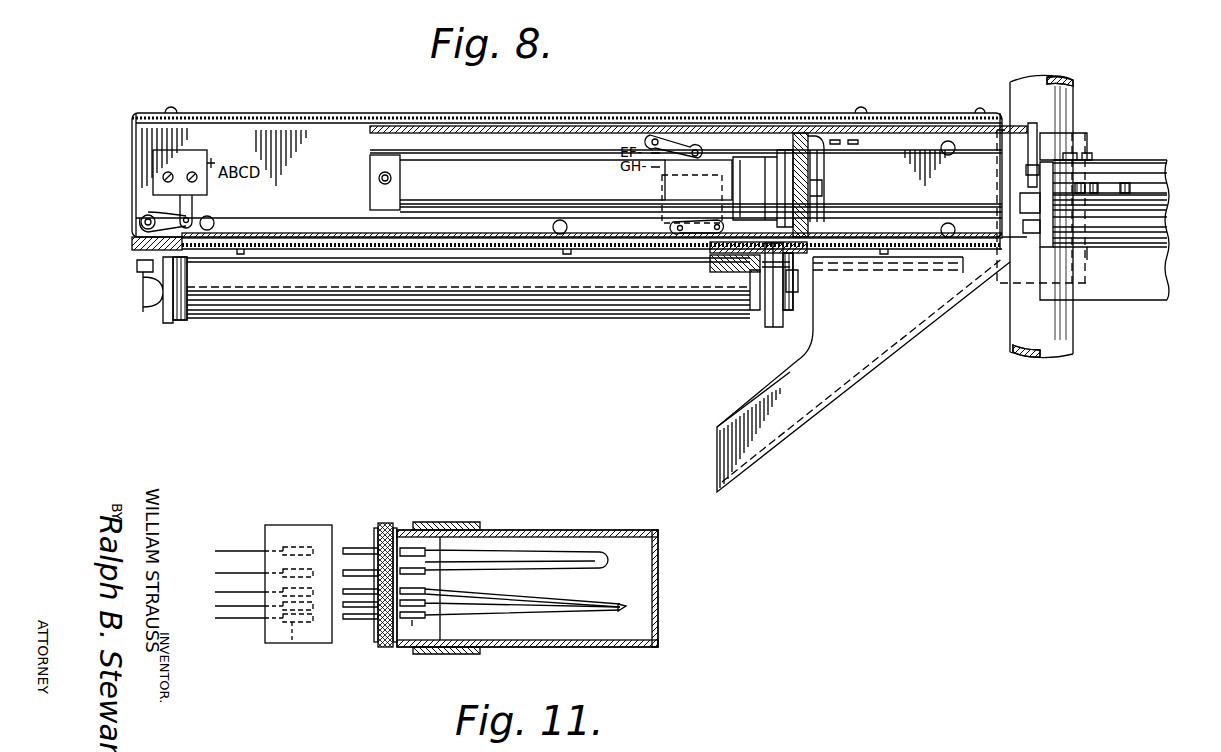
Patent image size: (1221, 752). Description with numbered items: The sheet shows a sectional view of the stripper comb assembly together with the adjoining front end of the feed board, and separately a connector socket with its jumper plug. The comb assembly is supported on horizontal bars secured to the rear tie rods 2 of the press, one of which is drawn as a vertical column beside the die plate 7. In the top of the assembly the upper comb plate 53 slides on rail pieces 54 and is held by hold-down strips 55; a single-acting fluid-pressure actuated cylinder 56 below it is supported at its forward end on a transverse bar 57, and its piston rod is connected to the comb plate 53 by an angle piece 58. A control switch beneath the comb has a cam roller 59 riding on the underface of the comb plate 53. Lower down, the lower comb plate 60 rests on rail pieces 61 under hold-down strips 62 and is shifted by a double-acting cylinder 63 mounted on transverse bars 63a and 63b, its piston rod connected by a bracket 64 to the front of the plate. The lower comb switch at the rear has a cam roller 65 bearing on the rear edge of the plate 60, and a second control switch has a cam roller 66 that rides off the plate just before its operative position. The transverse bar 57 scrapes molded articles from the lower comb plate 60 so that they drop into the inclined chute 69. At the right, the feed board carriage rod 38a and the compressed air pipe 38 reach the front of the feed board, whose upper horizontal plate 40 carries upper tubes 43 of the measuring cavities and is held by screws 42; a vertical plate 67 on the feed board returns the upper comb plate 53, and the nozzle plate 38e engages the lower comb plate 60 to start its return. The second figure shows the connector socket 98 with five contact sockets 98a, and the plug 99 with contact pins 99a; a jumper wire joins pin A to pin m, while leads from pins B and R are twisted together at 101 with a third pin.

In FIG. 8, the tie rods 2 is at (1074, 96).
In FIG. 8, the die plate 7 is at (1103, 273).
In FIG. 8, the compressed air pipe 38 is at (1162, 240).
In FIG. 8, the parallel rod 38a is at (1167, 207).
In FIG. 8, the nozzle plate 38e is at (1025, 235).
In FIG. 8, the upper horizontal plate 40 is at (1143, 162).
In FIG. 8, the screws 42 is at (1092, 158).
In FIG. 8, the upper tube 43 is at (1134, 190).
In FIG. 8, the comb plate 53 is at (895, 130).
In FIG. 8, the rail pieces 54 is at (892, 150).
In FIG. 8, the hold-down strips 55 is at (868, 127).
In FIG. 8, the fluid-pressure actuated cylinder 56 is at (517, 182).
In FIG. 8, the transverse bar 57 is at (810, 214).
In FIG. 8, the angle piece 58 is at (827, 145).
In FIG. 8, the cam roller 59 is at (655, 134).
In FIG. 8, the lower comb plate 60 is at (348, 236).
In FIG. 8, the rail pieces 61 is at (403, 250).
In FIG. 8, the hold-down strips 62 is at (900, 228).
In FIG. 8, the fluid pressure actuated cylinder 63 is at (473, 288).
In FIG. 8, the transverse bar 63a is at (185, 254).
In FIG. 8, the transverse bar 63b is at (706, 262).
In FIG. 8, the bracket 64 is at (800, 282).
In FIG. 8, the cam roller 65 is at (141, 220).
In FIG. 8, the cam roller 66 is at (670, 228).
In FIG. 8, the vertical plate 67 is at (1032, 124).
In FIG. 8, the inclined chute 69 is at (930, 330).
In FIG. 11, the connector socket 98 is at (314, 525).
In FIG. 11, the contact sockets 98a is at (292, 643).
In FIG. 11, the plug 99 is at (386, 524).
In FIG. 11, the contact pins 99a is at (343, 571).
In FIG. 11, the pin A is at (412, 547).
In FIG. 11, the pin m is at (419, 569).
In FIG. 11, the pin B is at (428, 590).
In FIG. 11, the pin R is at (428, 608).
In FIG. 11, the twisted leads 101 is at (622, 611).